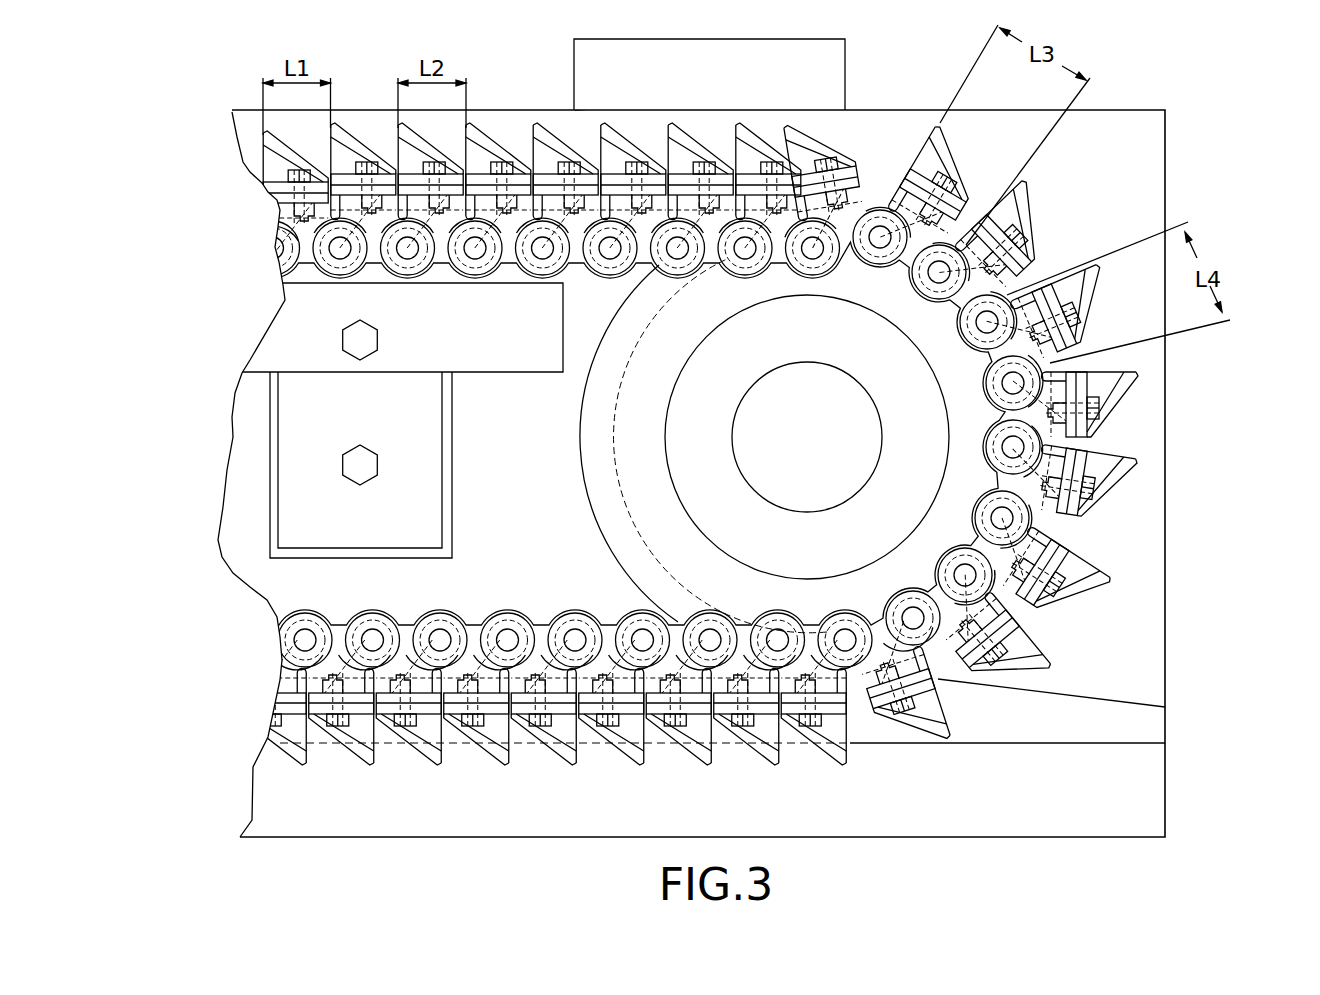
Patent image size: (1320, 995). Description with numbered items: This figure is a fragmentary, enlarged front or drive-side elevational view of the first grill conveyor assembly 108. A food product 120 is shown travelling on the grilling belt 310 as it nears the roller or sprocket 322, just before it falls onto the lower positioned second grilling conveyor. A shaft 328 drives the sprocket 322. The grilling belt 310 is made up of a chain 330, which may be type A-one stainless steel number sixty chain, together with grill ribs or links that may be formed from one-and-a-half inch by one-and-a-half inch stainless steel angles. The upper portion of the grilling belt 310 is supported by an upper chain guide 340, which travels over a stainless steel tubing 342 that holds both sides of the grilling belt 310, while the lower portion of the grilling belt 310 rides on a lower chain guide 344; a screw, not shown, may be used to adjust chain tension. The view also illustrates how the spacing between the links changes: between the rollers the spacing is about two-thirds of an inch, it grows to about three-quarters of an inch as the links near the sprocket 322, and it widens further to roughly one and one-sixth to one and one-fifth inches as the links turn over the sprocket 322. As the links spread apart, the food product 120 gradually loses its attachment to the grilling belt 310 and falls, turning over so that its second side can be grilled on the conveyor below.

The first grill conveyor assembly 108 is at (1228, 878).
The food product 120 is at (827, 38).
The grilling belt 310 is at (1038, 219).
The roller or sprocket 322 is at (1120, 392).
The shaft 328 is at (743, 478).
The chain 330 is at (1030, 537).
The upper chain guide 340 is at (315, 333).
The stainless steel tubing 342 is at (298, 499).
The lower chain guide 344 is at (1150, 722).